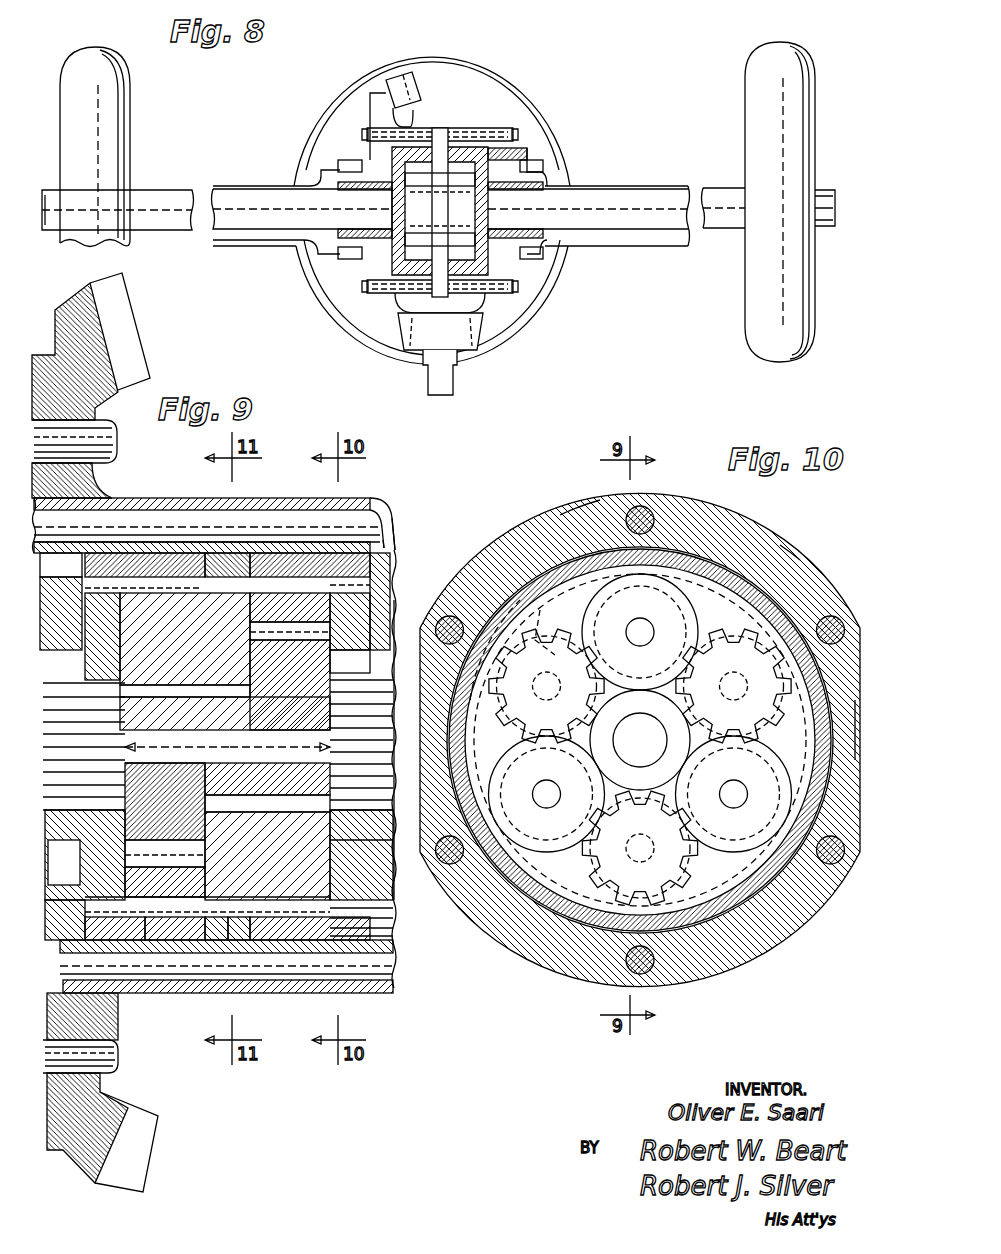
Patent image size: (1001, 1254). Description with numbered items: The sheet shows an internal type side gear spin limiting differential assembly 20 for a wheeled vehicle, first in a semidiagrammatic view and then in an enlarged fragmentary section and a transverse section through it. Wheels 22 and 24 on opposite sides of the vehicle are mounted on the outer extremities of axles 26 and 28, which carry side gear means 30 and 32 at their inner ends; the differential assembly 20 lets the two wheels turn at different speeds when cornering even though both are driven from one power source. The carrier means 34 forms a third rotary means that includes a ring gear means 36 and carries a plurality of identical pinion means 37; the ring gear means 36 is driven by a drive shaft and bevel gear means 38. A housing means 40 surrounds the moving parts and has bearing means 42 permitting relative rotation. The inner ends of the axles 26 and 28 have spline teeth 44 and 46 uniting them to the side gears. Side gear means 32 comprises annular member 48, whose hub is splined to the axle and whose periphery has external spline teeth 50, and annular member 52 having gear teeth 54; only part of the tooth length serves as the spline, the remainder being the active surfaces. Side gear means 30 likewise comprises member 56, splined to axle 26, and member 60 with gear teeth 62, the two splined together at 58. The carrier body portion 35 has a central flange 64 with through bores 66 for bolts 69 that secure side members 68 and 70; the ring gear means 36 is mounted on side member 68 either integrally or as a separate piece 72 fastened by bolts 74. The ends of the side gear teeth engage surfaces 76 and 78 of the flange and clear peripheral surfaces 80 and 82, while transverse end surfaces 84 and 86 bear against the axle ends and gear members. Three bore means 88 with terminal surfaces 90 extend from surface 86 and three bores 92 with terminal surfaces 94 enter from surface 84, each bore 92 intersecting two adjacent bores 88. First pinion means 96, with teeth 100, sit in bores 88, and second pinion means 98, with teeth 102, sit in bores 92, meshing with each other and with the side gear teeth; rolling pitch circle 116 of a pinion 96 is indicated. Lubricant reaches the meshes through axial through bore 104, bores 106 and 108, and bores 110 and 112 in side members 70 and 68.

In FIG. 8, the differential assembly 20 is at (586, 131).
In FIG. 8, the wheel 22 is at (770, 262).
In FIG. 8, the wheel 24 is at (78, 166).
In FIG. 8, the axle 26 is at (672, 200).
In FIG. 9, the axle 26 is at (280, 752).
In FIG. 8, the axle 28 is at (166, 200).
In FIG. 9, the axle 28 is at (177, 752).
In FIG. 8, the side gear means 30 is at (488, 262).
In FIG. 9, the side gear means 30 is at (385, 876).
In FIG. 8, the side gear means 32 is at (392, 262).
In FIG. 9, the side gear means 32 is at (108, 918).
In FIG. 8, the carrier means 34 is at (462, 165).
In FIG. 9, the body portion 35 is at (396, 660).
In FIG. 8, the ring gear means 36 is at (392, 97).
In FIG. 9, the ring gear means 36 is at (105, 372).
In FIG. 8, the pinion means 37 is at (478, 190).
In FIG. 8, the drive shaft and bevel gear means 38 is at (440, 386).
In FIG. 8, the housing means 40 is at (308, 124).
In FIG. 8, the bearing means 42 is at (345, 186).
In FIG. 9, the spline teeth 44 is at (395, 740).
In FIG. 9, the spline teeth 46 is at (60, 880).
In FIG. 9, the annular member 48 is at (118, 826).
In FIG. 9, the external spline teeth 50 is at (128, 862).
In FIG. 9, the annular member 52 is at (160, 938).
In FIG. 9, the gear teeth 54 is at (120, 938).
In FIG. 9, the member 56 is at (340, 625).
In FIG. 9, the spline connection 58 is at (385, 548).
In FIG. 9, the member 60 is at (384, 545).
In FIG. 10, the member 60 is at (742, 588).
In FIG. 9, the gear teeth 62 is at (298, 522).
In FIG. 10, the gear teeth 62 is at (782, 632).
In FIG. 8, the flange 64 is at (439, 150).
In FIG. 9, the flange 64 is at (230, 560).
In FIG. 9, the through bores 66 is at (345, 500).
In FIG. 10, the through bores 66 is at (590, 520).
In FIG. 8, the side member 68 is at (372, 150).
In FIG. 9, the side member 68 is at (168, 505).
In FIG. 8, the bolts 69 is at (512, 134).
In FIG. 9, the bolts 69 is at (118, 518).
In FIG. 10, the bolts 69 is at (648, 522).
In FIG. 8, the side member 70 is at (520, 150).
In FIG. 9, the side member 70 is at (298, 492).
In FIG. 10, the side member 70 is at (698, 522).
In FIG. 9, the separate piece 72 is at (70, 312).
In FIG. 9, the bolts 74 is at (115, 426).
In FIG. 9, the surface 76 is at (243, 938).
In FIG. 9, the surface 78 is at (215, 938).
In FIG. 9, the peripheral surface 80 is at (252, 612).
In FIG. 9, the peripheral surface 82 is at (195, 895).
In FIG. 9, the transverse end surface 84 is at (128, 662).
In FIG. 9, the transverse end surface 86 is at (330, 675).
In FIG. 10, the transverse end surface 86 is at (672, 784).
In FIG. 9, the bore means 88 is at (262, 775).
In FIG. 10, the bore means 88 is at (620, 736).
In FIG. 9, the terminal surface 90 is at (205, 790).
In FIG. 9, the bores 92 is at (200, 694).
In FIG. 10, the bores 92 is at (640, 767).
In FIG. 9, the terminal surface 94 is at (250, 640).
In FIG. 9, the pinion means 96 is at (300, 938).
In FIG. 10, the pinion means 96 is at (547, 678).
In FIG. 9, the pinion means 98 is at (143, 580).
In FIG. 10, the pinion means 98 is at (712, 568).
In FIG. 9, the teeth 100 is at (375, 832).
In FIG. 9, the teeth 102 is at (185, 585).
In FIG. 9, the axial through bore 104 is at (290, 716).
In FIG. 10, the axial through bore 104 is at (667, 737).
In FIG. 9, the bore 106 is at (360, 655).
In FIG. 9, the bore 108 is at (208, 855).
In FIG. 9, the bore 110 is at (375, 582).
In FIG. 9, the bore 112 is at (52, 576).
In FIG. 10, the rolling pitch circle 116 is at (558, 605).